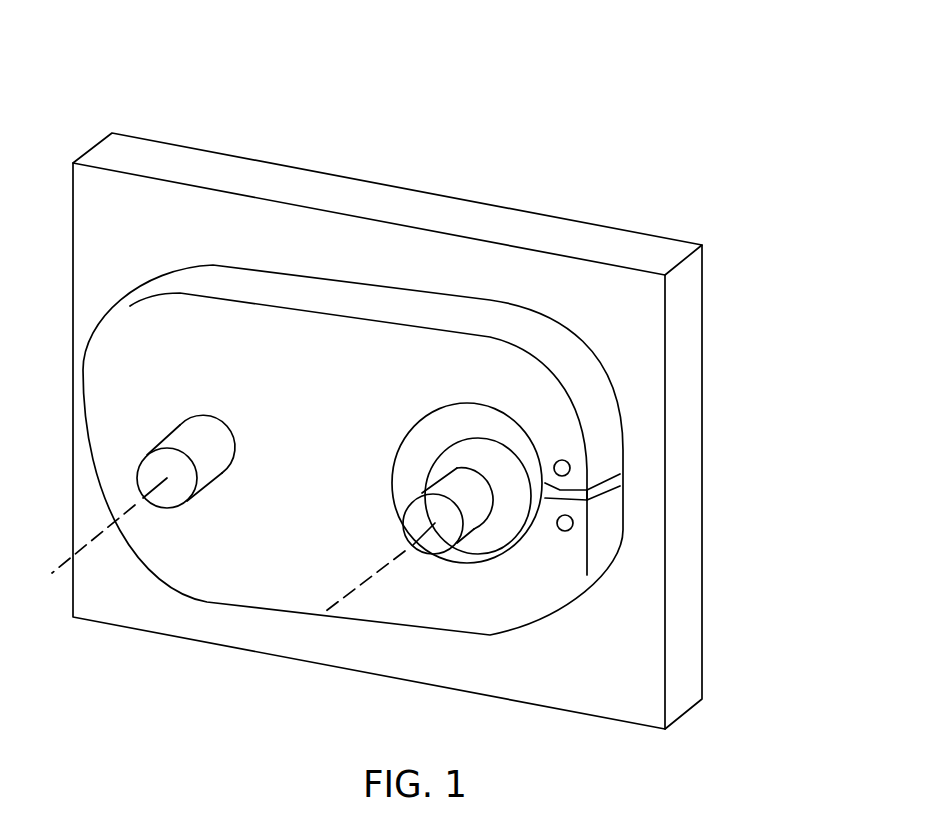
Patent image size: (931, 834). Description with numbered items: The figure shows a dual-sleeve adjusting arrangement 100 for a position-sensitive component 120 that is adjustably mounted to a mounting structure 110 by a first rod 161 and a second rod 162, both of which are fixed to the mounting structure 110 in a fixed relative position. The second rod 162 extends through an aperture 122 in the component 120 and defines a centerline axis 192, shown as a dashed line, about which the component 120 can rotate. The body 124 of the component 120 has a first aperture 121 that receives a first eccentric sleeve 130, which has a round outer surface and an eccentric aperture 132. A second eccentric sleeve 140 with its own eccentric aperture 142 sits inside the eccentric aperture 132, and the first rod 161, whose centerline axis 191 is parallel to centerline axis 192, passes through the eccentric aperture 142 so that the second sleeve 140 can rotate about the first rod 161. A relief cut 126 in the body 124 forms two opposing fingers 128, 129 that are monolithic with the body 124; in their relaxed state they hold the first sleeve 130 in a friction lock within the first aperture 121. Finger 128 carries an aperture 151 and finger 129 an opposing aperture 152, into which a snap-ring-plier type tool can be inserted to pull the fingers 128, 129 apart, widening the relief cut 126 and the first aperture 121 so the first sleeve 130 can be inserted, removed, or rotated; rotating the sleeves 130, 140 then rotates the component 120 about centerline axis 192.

The dual-sleeve adjusting arrangement 100 is at (527, 118).
The mounting structure 110 is at (647, 322).
The position-sensitive component 120 is at (283, 340).
The first aperture 121 is at (470, 528).
The aperture 122 is at (227, 473).
The body 124 is at (319, 404).
The relief cut 126 is at (634, 470).
The finger 128 is at (577, 457).
The finger 129 is at (583, 523).
The first eccentric sleeve 130 is at (452, 417).
The eccentric aperture 132 is at (465, 457).
The second eccentric sleeve 140 is at (510, 470).
The eccentric aperture 142 is at (487, 510).
The aperture 151 is at (568, 460).
The opposing aperture 152 is at (570, 530).
The first rod 161 is at (440, 532).
The second rod 162 is at (153, 477).
The centerline axis 191 is at (330, 617).
The centerline axis 192 is at (65, 567).